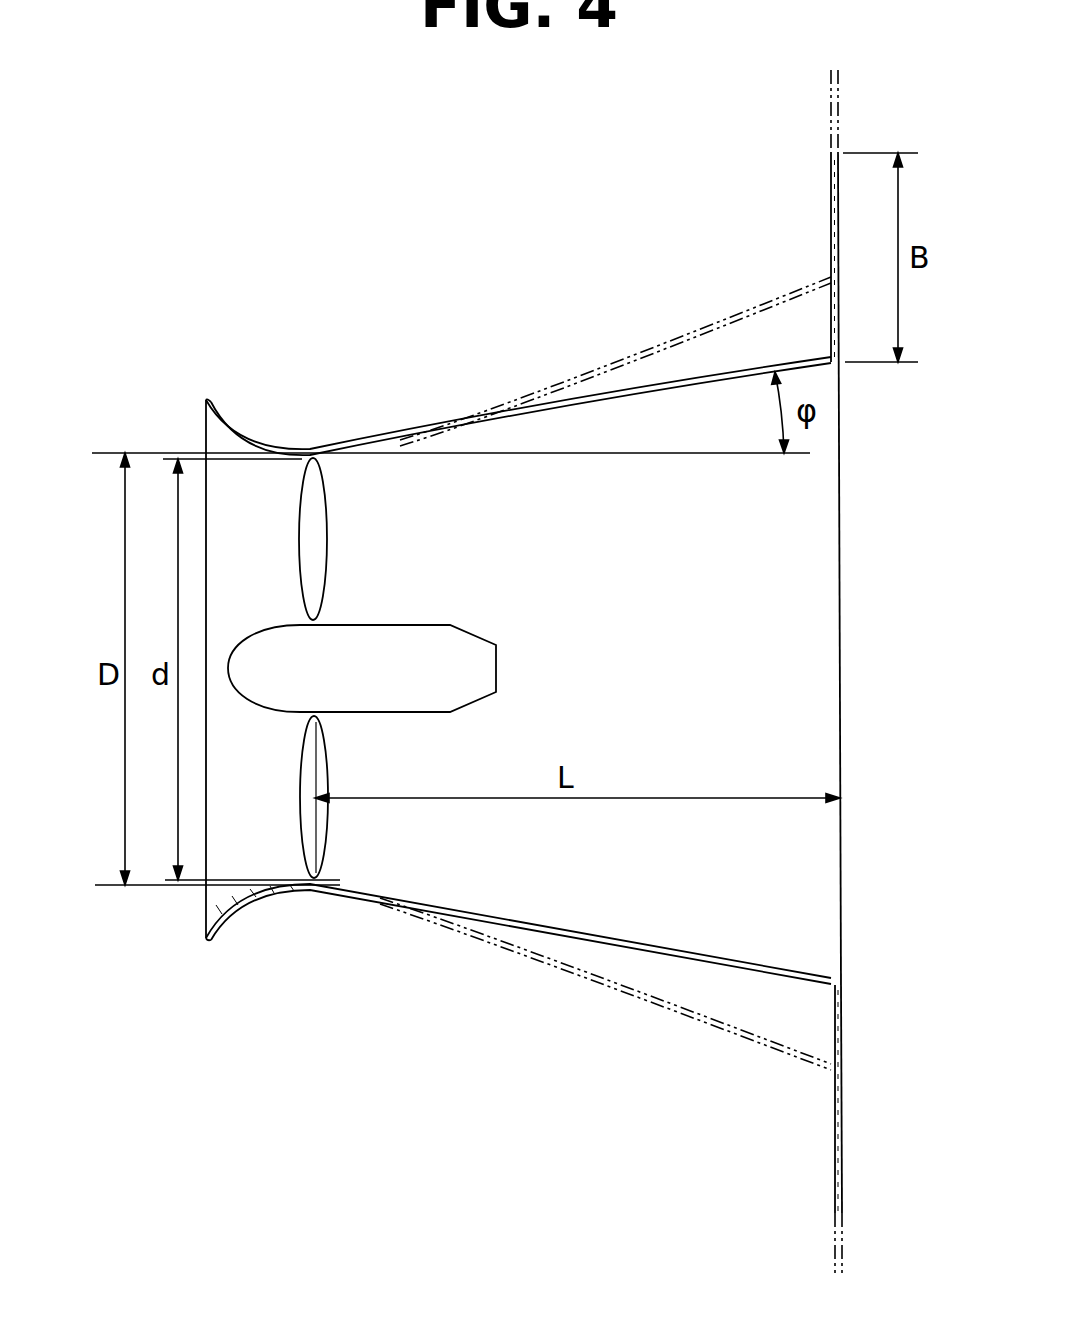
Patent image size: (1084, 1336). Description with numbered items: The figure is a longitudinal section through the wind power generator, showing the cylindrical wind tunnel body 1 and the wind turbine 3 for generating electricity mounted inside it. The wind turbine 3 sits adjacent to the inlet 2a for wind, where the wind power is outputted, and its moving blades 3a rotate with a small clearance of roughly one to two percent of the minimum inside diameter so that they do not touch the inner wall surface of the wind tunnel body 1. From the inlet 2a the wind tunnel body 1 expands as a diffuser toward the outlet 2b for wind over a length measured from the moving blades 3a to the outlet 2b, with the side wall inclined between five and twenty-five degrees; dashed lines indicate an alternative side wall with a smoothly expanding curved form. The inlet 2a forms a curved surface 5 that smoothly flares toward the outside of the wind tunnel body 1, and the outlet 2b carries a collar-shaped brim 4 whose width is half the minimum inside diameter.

The wind tunnel body 1 is at (612, 946).
The inlet 2a is at (266, 829).
The outlet 2b is at (862, 947).
The wind turbine 3 is at (393, 716).
The moving blades 3a is at (318, 482).
The collar-shaped brim 4 is at (831, 185).
The curved surface 5 is at (216, 440).